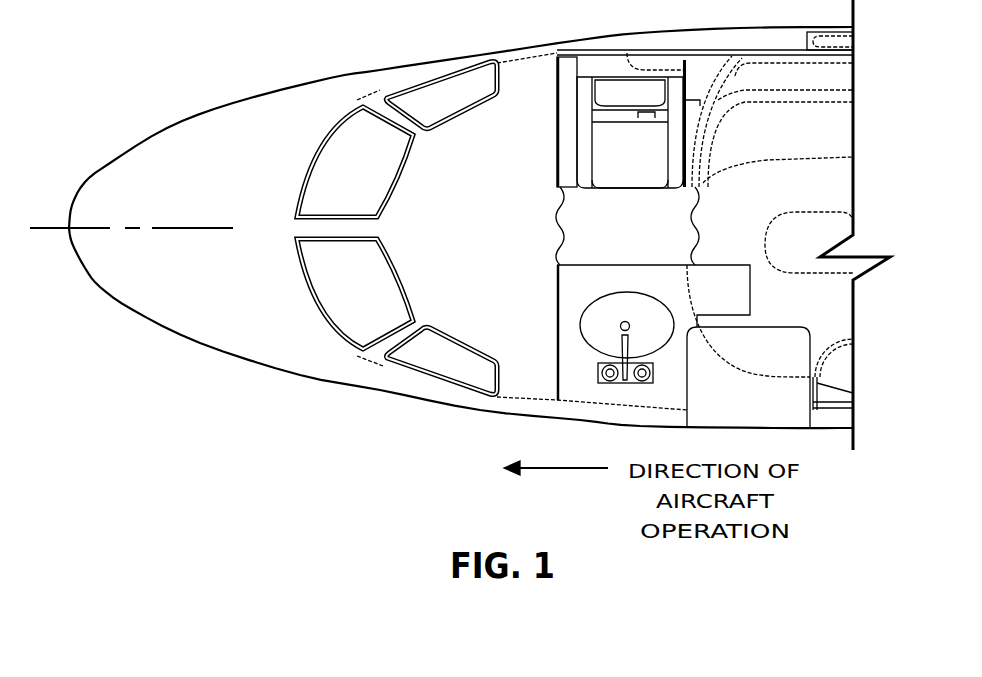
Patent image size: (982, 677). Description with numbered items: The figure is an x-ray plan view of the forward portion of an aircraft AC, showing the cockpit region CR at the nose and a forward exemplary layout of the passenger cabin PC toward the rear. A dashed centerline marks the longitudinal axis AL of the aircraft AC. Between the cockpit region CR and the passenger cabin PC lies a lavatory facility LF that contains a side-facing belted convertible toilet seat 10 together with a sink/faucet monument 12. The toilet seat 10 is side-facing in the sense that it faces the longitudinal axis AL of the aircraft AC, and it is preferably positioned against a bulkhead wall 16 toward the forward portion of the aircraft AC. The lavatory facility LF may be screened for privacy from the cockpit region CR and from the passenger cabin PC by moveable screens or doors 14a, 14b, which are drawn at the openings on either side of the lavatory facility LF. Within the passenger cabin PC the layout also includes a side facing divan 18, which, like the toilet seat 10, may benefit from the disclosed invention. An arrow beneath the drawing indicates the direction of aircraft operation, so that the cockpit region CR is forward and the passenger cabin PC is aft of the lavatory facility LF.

The side-facing belted convertible toilet seat 10 is at (636, 166).
The sink/faucet monument 12 is at (638, 319).
The moveable screen or door 14a is at (558, 212).
The moveable screen or door 14b is at (698, 228).
The bulkhead wall 16 is at (566, 122).
The side facing divan 18 is at (805, 140).
The cockpit region CR is at (360, 133).
The aircraft AC is at (156, 397).
The lavatory facility LF is at (590, 279).
The passenger cabin PC is at (818, 317).
The longitudinal axis AL is at (166, 227).